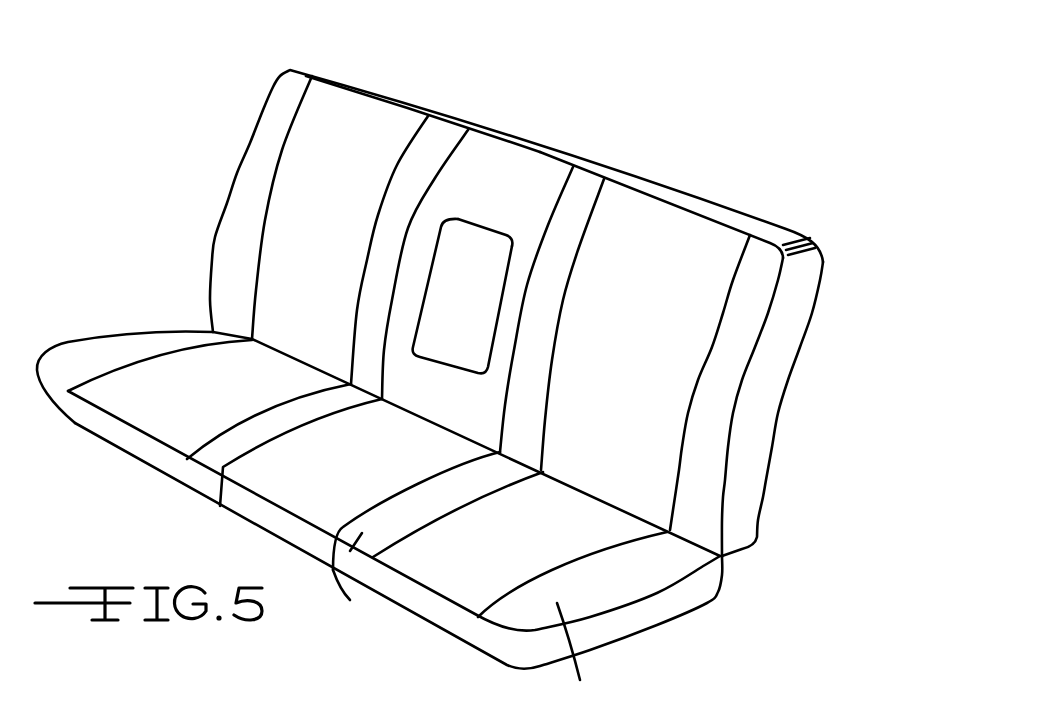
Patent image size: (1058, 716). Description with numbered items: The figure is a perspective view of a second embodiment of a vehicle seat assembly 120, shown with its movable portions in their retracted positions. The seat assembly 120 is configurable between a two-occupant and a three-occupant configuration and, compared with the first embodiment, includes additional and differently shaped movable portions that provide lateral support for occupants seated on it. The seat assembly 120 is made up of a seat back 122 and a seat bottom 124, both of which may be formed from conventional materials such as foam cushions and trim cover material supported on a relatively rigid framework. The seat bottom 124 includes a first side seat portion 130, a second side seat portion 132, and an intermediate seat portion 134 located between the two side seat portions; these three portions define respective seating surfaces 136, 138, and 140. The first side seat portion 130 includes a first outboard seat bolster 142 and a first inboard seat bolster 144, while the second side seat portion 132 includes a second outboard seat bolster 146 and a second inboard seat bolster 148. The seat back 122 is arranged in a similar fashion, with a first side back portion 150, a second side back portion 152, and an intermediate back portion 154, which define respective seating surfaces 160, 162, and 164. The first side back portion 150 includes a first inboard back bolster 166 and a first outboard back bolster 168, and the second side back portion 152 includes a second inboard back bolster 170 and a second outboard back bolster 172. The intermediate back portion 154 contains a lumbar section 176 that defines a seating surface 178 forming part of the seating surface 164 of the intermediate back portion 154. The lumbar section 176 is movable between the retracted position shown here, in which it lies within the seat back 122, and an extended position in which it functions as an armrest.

The seat assembly 120 is at (647, 100).
The seat back 122 is at (238, 161).
The seat bottom 124 is at (148, 327).
The first side seat portion 130 is at (134, 443).
The second side seat portion 132 is at (413, 603).
The intermediate seat portion 134 is at (278, 526).
The seating surface 136 is at (269, 419).
The seating surface 138 is at (572, 572).
The seating surface 140 is at (413, 506).
The first outboard seat bolster 142 is at (77, 357).
The first inboard seat bolster 144 is at (210, 450).
The second outboard seat bolster 146 is at (580, 680).
The second inboard seat bolster 148 is at (350, 600).
The first side back portion 150 is at (390, 127).
The second side back portion 152 is at (685, 220).
The intermediate back portion 154 is at (520, 160).
The seating surface 160 is at (365, 250).
The seating surface 162 is at (680, 382).
The seating surface 164 is at (525, 309).
The first inboard back bolster 166 is at (432, 150).
The first outboard back bolster 168 is at (303, 97).
The second inboard back bolster 170 is at (591, 186).
The second outboard back bolster 172 is at (758, 270).
The lumbar section 176 is at (490, 263).
The seating surface 178 is at (462, 296).